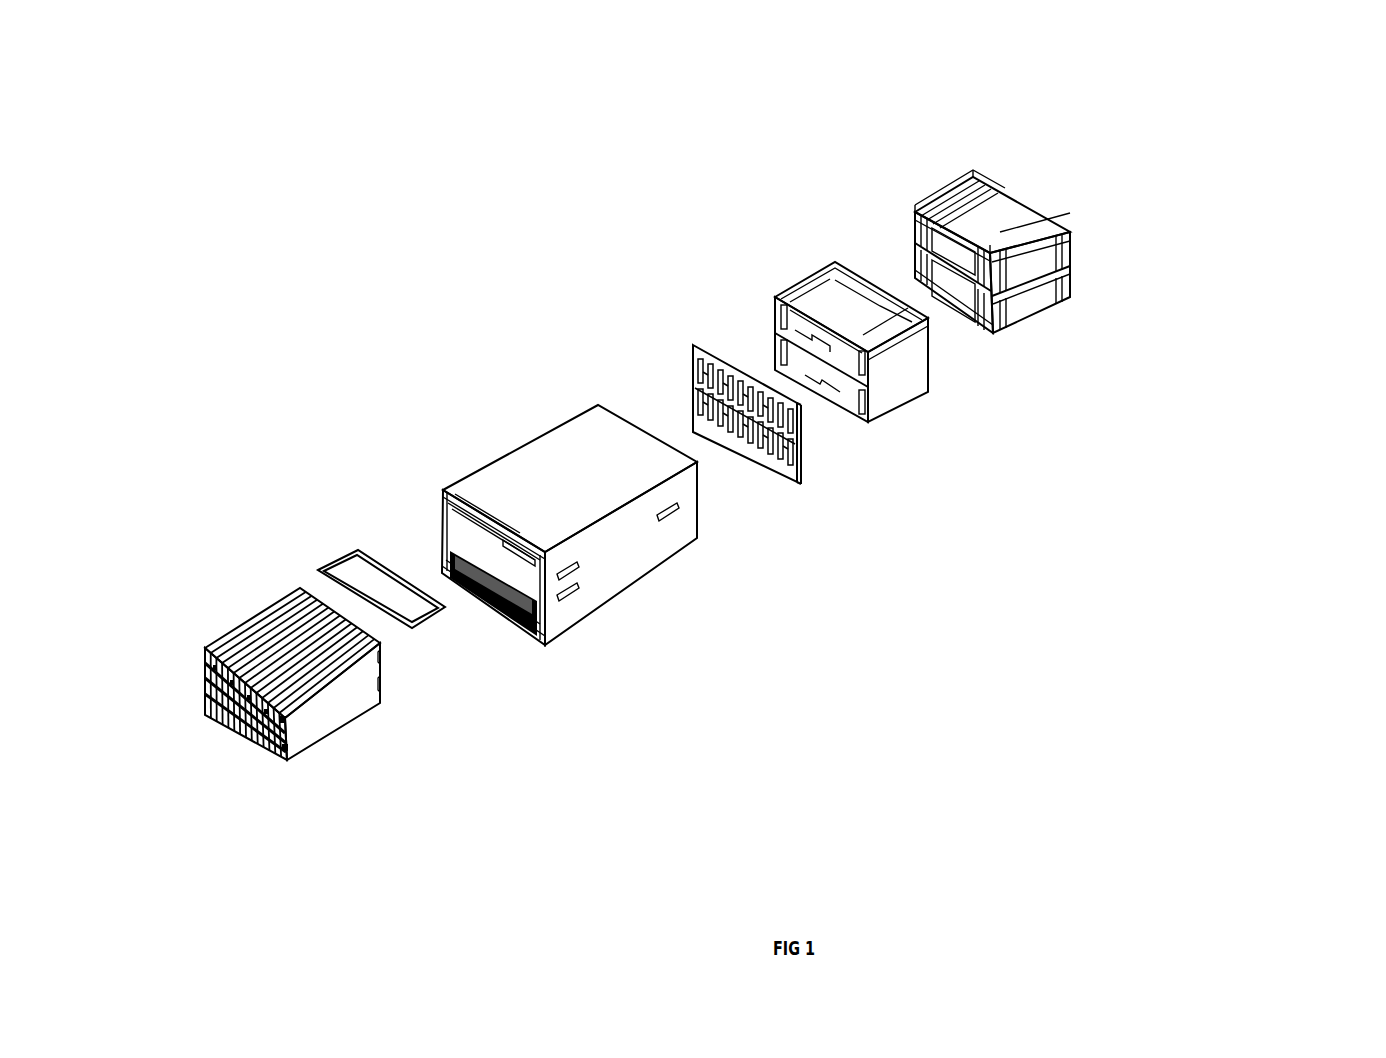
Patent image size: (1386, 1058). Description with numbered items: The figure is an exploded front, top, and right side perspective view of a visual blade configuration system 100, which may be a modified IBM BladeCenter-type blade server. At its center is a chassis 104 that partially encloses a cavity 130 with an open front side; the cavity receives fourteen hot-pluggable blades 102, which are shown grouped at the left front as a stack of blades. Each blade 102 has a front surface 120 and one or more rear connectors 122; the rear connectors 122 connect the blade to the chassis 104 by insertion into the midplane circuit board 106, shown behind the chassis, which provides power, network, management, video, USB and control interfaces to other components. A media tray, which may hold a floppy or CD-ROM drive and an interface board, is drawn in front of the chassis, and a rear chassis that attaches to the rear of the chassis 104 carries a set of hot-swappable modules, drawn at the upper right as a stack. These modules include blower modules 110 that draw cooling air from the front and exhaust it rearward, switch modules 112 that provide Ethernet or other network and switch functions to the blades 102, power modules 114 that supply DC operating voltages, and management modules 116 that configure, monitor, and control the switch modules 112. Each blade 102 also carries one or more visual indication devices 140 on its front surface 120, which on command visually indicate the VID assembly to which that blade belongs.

The visual blade configuration system 100 is at (1235, 178).
The blades 102 is at (250, 597).
The chassis 104 is at (542, 475).
The midplane circuit board 106 is at (680, 357).
The blower module 110 is at (955, 222).
The switch modules 112 is at (1030, 273).
The power modules 114 is at (1065, 510).
The management modules 116 is at (913, 237).
The front surface 120 is at (250, 752).
The rear connectors 122 is at (392, 682).
The cavity 130 is at (542, 570).
The visual indication devices 140 is at (283, 720).